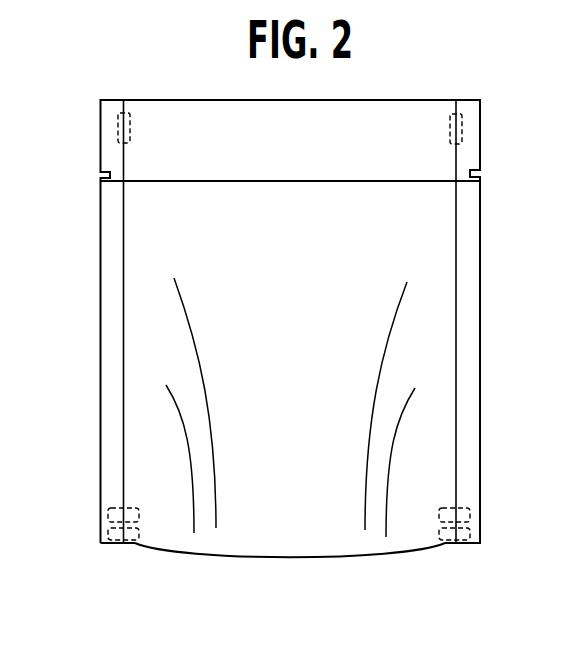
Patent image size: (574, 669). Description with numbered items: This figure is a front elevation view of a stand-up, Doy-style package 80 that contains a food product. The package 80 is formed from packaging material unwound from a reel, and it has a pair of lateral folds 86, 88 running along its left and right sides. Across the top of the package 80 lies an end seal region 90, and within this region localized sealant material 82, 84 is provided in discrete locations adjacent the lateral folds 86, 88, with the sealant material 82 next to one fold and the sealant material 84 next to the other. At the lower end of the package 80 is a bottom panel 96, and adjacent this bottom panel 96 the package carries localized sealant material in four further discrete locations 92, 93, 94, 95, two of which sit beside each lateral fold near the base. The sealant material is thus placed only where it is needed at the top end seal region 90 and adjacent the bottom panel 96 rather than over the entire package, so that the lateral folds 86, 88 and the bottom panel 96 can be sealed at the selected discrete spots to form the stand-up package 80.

The stand-up package 80 is at (80, 208).
The localized sealant material 82 is at (128, 100).
The localized sealant material 84 is at (463, 117).
The lateral fold 86 is at (101, 263).
The lateral fold 88 is at (480, 313).
The end seal region 90 is at (407, 123).
The discrete location of localized sealant material 92 is at (118, 546).
The discrete location of localized sealant material 93 is at (115, 503).
The discrete location of localized sealant material 94 is at (450, 547).
The discrete location of localized sealant material 95 is at (465, 507).
The bottom panel 96 is at (295, 558).